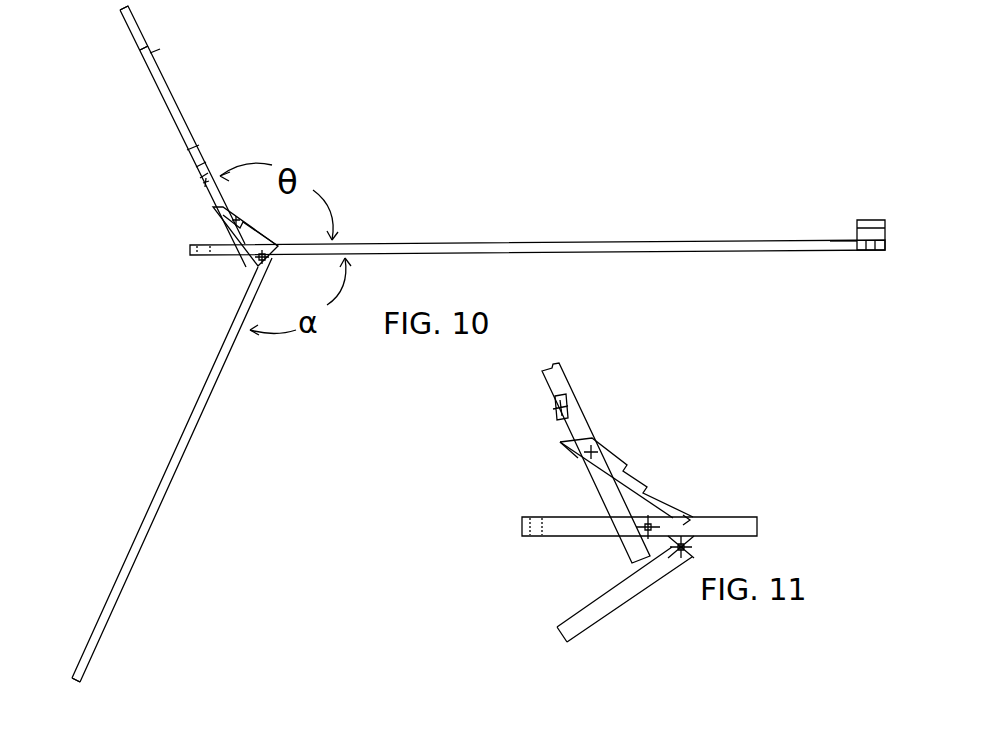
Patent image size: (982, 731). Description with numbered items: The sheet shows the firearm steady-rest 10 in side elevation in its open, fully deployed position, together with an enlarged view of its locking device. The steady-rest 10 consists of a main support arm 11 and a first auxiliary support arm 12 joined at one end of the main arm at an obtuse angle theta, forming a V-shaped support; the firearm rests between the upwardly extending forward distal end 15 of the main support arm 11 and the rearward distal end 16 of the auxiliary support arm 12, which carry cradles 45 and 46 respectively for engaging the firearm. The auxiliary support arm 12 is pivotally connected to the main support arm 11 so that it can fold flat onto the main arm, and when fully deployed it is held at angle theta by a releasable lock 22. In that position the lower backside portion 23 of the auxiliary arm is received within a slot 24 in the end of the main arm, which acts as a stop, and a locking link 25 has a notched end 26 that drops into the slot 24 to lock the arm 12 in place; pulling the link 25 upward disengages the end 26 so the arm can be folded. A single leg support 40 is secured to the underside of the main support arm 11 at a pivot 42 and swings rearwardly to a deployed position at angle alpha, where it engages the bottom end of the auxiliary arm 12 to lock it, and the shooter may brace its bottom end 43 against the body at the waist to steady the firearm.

In FIG. 10, the firearm steady-rest 10 is at (490, 132).
In FIG. 10, the main support arm 11 is at (612, 242).
In FIG. 11, the main support arm 11 is at (747, 515).
In FIG. 10, the first auxiliary support arm 12 is at (165, 96).
In FIG. 11, the first auxiliary support arm 12 is at (542, 388).
In FIG. 10, the forward distal end 15 is at (838, 241).
In FIG. 10, the rearward distal end 16 is at (155, 57).
In FIG. 11, the releasable lock 22 is at (654, 457).
In FIG. 10, the lower backside portion 23 is at (228, 240).
In FIG. 11, the slot 24 is at (648, 527).
In FIG. 11, the locking link 25 is at (667, 493).
In FIG. 11, the notched end 26 is at (683, 520).
In FIG. 10, the leg support 40 is at (167, 468).
In FIG. 11, the leg support 40 is at (592, 603).
In FIG. 10, the pivot 42 is at (255, 262).
In FIG. 11, the pivot 42 is at (683, 547).
In FIG. 10, the bottom end 43 is at (83, 677).
In FIG. 10, the cradle 45 is at (873, 220).
In FIG. 10, the cradle 46 is at (133, 15).